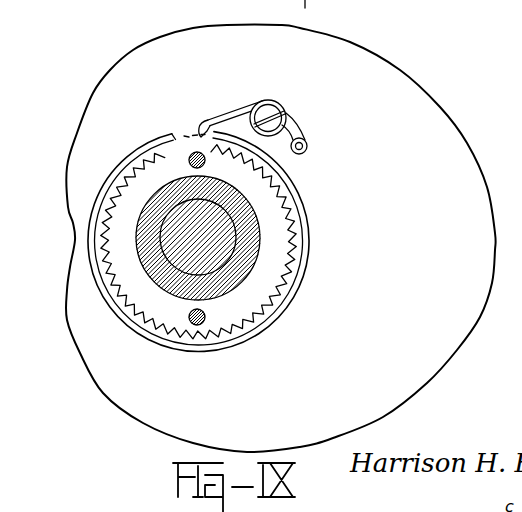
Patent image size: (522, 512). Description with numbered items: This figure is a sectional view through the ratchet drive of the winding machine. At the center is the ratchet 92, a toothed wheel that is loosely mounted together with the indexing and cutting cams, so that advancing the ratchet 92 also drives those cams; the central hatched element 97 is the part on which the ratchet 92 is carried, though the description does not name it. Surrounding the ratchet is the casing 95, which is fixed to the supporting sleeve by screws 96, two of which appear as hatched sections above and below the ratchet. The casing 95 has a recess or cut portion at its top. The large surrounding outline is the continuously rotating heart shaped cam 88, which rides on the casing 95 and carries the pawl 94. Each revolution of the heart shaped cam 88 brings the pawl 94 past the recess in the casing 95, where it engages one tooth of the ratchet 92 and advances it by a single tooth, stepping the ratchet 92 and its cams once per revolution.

The heart shaped cam 88 is at (445, 347).
The ratchet 92 is at (272, 207).
The pawl 94 is at (215, 121).
The casing 95 is at (143, 143).
The screws 96 is at (190, 323).
The shaft 97 is at (162, 238).